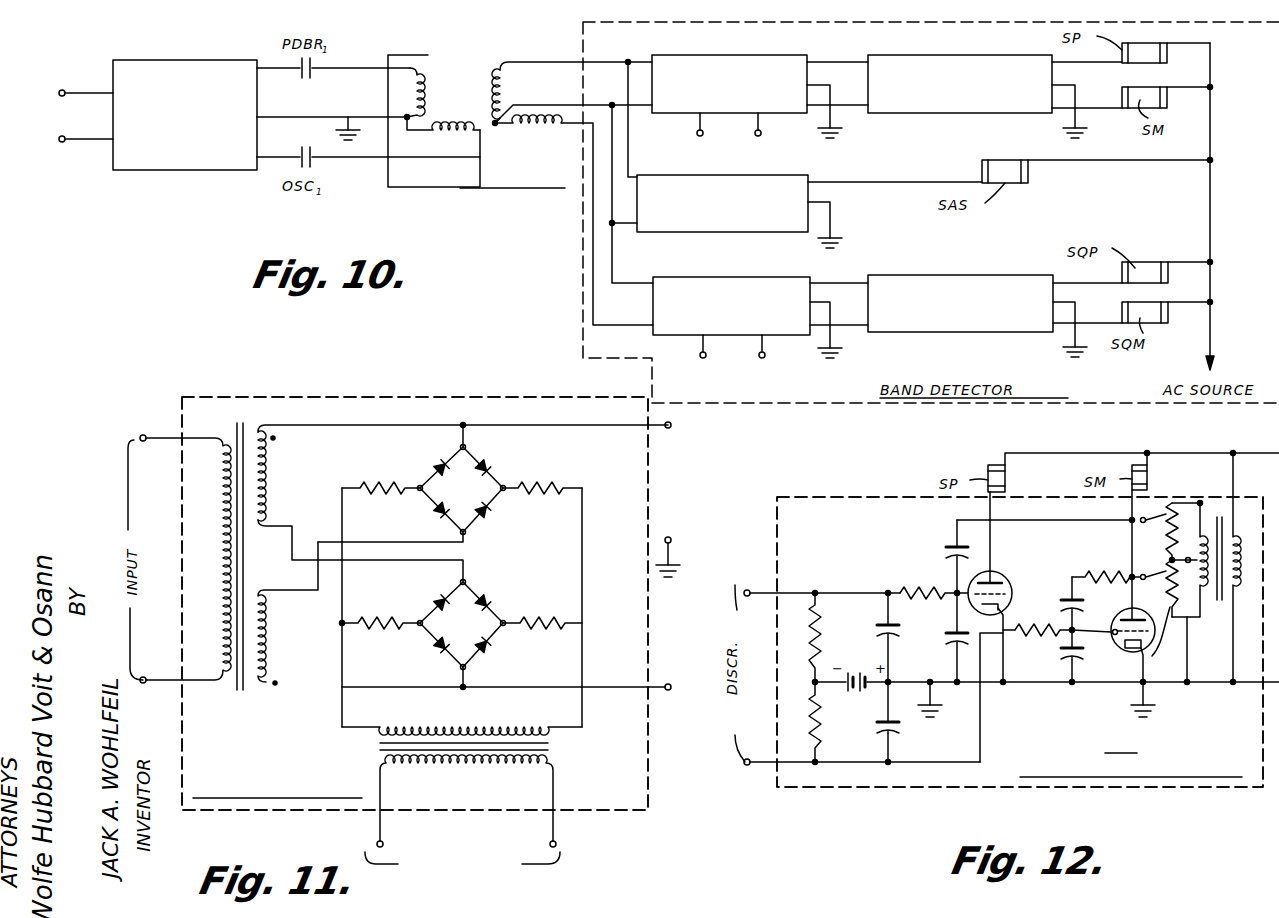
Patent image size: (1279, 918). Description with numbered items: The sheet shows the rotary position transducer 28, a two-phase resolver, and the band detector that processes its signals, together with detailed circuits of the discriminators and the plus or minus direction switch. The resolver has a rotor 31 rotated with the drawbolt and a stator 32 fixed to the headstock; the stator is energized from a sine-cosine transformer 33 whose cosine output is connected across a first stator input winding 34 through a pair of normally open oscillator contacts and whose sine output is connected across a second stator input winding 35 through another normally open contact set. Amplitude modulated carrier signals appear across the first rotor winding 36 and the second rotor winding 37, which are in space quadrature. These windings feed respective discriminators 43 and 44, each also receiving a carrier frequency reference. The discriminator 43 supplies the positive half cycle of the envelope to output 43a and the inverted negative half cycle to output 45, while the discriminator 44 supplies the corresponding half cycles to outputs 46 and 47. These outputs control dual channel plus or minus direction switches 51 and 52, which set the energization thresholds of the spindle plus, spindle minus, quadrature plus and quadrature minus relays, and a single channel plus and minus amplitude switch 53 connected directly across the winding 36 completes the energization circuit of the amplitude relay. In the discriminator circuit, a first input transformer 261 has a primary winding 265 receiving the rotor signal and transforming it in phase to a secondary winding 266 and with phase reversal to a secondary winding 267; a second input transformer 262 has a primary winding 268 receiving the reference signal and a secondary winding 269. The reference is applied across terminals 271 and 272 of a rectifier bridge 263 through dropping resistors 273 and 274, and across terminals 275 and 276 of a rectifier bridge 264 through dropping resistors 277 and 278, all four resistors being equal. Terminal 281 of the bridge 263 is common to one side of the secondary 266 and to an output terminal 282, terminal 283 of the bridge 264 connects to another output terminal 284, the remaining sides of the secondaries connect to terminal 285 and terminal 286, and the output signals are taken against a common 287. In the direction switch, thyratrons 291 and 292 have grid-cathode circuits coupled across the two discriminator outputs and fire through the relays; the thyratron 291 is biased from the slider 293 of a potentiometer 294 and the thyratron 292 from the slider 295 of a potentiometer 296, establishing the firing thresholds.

In FIG. 10, the rotary position transducer 28 is at (509, 187).
In FIG. 10, the rotor 31 is at (547, 88).
In FIG. 10, the stator 32 is at (506, 175).
In FIG. 10, the sine-cosine transformer 33 is at (130, 172).
In FIG. 10, the first stator input winding 34 is at (450, 137).
In FIG. 10, the second stator input winding 35 is at (413, 80).
In FIG. 10, the first rotor winding 36 is at (508, 75).
In FIG. 10, the second rotor winding 37 is at (557, 135).
In FIG. 10, the discriminator 43 is at (680, 56).
In FIG. 11, the discriminator 43 is at (302, 806).
In FIG. 10, the discriminator output 43a is at (822, 62).
In FIG. 10, the discriminator 44 is at (780, 336).
In FIG. 11, the discriminator 44 is at (415, 603).
In FIG. 10, the discriminator output 45 is at (856, 108).
In FIG. 10, the discriminator output 46 is at (828, 283).
In FIG. 10, the discriminator output 47 is at (856, 326).
In FIG. 10, the dual channel plus or minus direction switch 51 is at (938, 56).
In FIG. 12, the dual channel plus or minus direction switch 51 is at (1158, 791).
In FIG. 10, the dual channel plus or minus direction switch 52 is at (948, 333).
In FIG. 12, the dual channel plus or minus direction switch 52 is at (1020, 642).
In FIG. 10, the single channel plus and minus amplitude switch 53 is at (722, 233).
In FIG. 11, the first input transformer 261 is at (384, 530).
In FIG. 11, the second input transformer 262 is at (518, 786).
In FIG. 11, the rectifier bridge 263 is at (442, 462).
In FIG. 11, the rectifier bridge 264 is at (489, 629).
In FIG. 11, the primary winding 265 is at (210, 468).
In FIG. 11, the secondary winding 266 is at (267, 488).
In FIG. 11, the secondary winding 267 is at (272, 656).
In FIG. 11, the primary winding 268 is at (470, 773).
In FIG. 11, the secondary winding 269 is at (470, 727).
In FIG. 11, the bridge terminal 271 is at (420, 486).
In FIG. 11, the bridge terminal 272 is at (508, 486).
In FIG. 11, the dropping resistor 273 is at (443, 461).
In FIG. 11, the dropping resistor 274 is at (573, 488).
In FIG. 11, the bridge terminal 275 is at (420, 621).
In FIG. 11, the bridge terminal 276 is at (509, 622).
In FIG. 11, the dropping resistor 277 is at (380, 634).
In FIG. 11, the dropping resistor 278 is at (560, 628).
In FIG. 11, the bridge terminal 281 is at (466, 445).
In FIG. 11, the output terminal 282 is at (671, 424).
In FIG. 12, the output terminal 282 is at (760, 570).
In FIG. 11, the bridge terminal 283 is at (462, 666).
In FIG. 11, the output terminal 284 is at (668, 691).
In FIG. 12, the output terminal 284 is at (750, 768).
In FIG. 11, the bridge terminal 285 is at (462, 622).
In FIG. 11, the bridge terminal 286 is at (466, 534).
In FIG. 11, the common 287 is at (670, 540).
In FIG. 12, the common 287 is at (1058, 685).
In FIG. 12, the thyratron 291 is at (1003, 580).
In FIG. 12, the thyratron 292 is at (1128, 660).
In FIG. 12, the slider 293 is at (1160, 518).
In FIG. 12, the potentiometer 294 is at (1200, 500).
In FIG. 12, the slider 295 is at (1160, 578).
In FIG. 12, the potentiometer 296 is at (1165, 662).